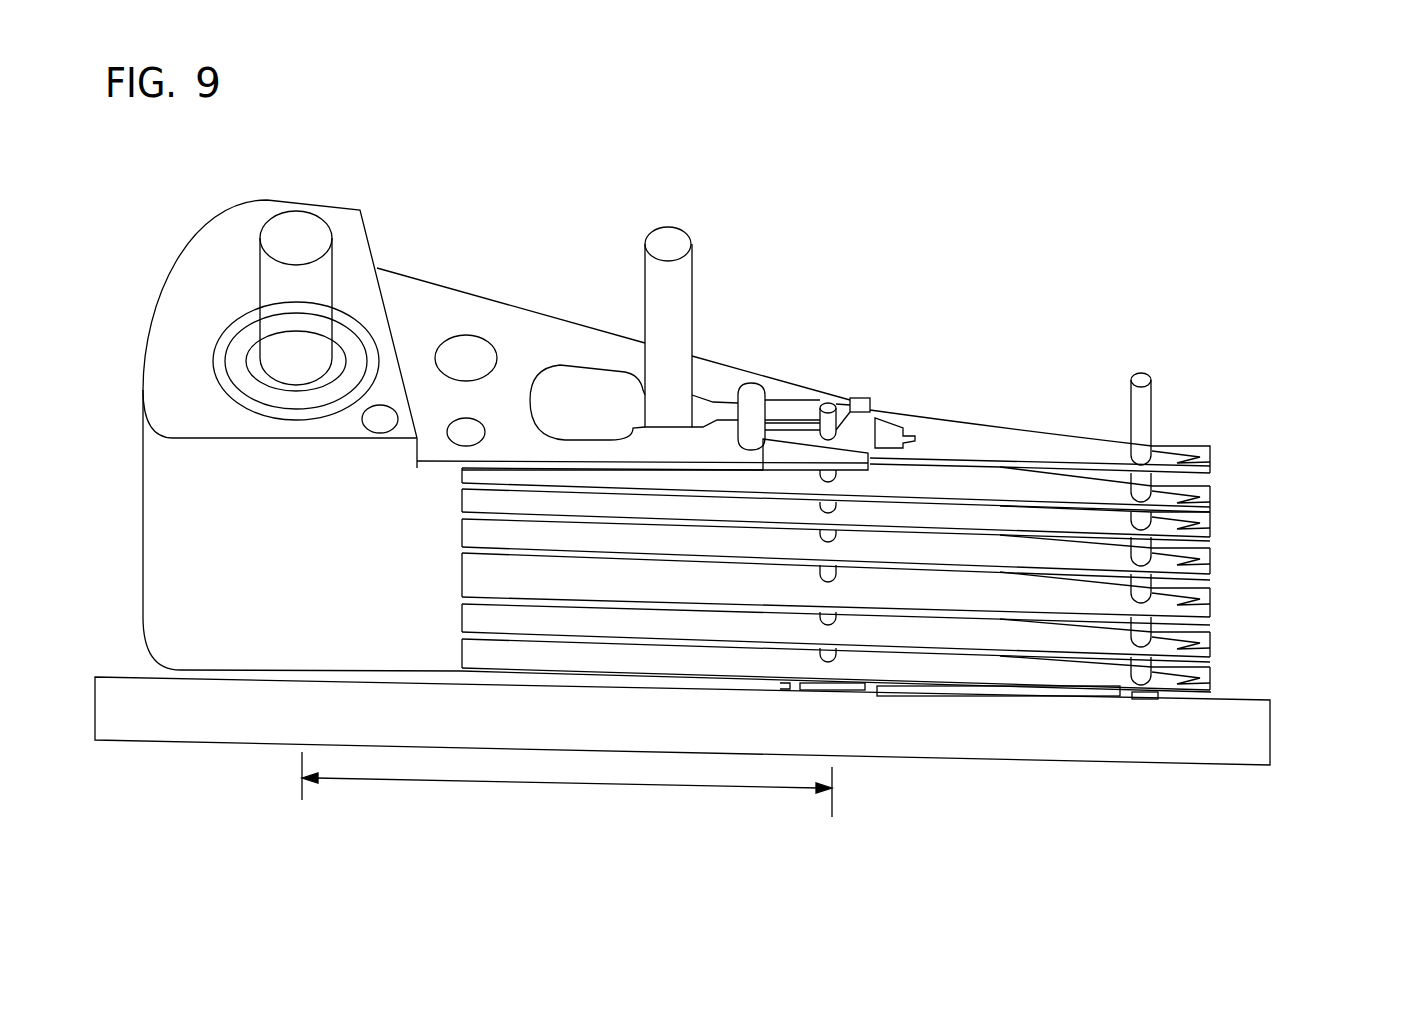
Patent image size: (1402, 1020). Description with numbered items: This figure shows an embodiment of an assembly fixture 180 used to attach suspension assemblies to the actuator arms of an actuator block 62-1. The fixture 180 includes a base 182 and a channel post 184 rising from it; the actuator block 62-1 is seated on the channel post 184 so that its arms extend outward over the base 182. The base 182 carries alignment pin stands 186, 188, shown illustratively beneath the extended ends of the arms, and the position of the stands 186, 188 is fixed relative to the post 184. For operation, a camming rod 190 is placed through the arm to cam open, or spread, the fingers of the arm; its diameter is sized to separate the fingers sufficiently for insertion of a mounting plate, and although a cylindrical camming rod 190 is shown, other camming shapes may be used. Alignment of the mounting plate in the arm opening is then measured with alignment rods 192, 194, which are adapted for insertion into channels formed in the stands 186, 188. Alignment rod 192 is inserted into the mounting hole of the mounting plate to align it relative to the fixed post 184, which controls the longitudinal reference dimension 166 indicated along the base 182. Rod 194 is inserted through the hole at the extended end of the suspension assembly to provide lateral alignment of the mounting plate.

The actuator block 62-1 is at (513, 330).
The reference dimension 166 is at (560, 790).
The fixture 180 is at (1243, 622).
The base 182 is at (1233, 725).
The channel post 184 is at (310, 232).
The alignment pin stand 186 is at (870, 692).
The alignment pin stand 188 is at (1162, 698).
The camming rod 190 is at (672, 240).
The alignment rod 192 is at (830, 405).
The alignment rod 194 is at (1145, 378).